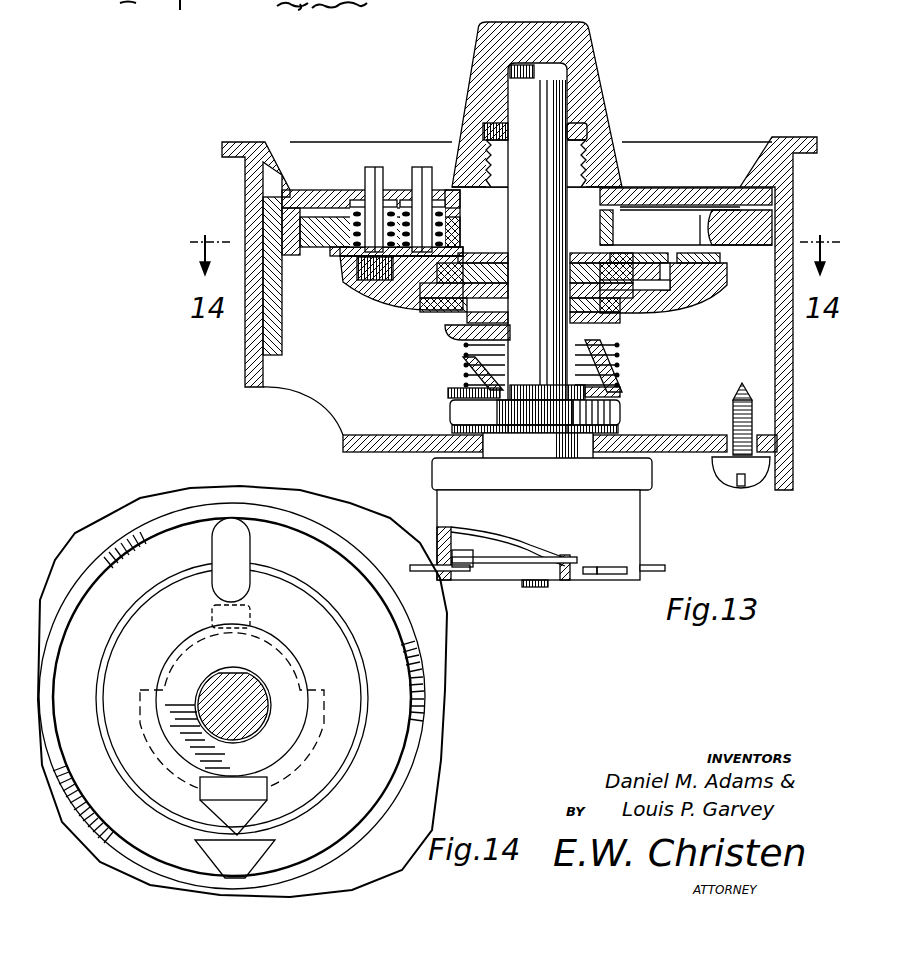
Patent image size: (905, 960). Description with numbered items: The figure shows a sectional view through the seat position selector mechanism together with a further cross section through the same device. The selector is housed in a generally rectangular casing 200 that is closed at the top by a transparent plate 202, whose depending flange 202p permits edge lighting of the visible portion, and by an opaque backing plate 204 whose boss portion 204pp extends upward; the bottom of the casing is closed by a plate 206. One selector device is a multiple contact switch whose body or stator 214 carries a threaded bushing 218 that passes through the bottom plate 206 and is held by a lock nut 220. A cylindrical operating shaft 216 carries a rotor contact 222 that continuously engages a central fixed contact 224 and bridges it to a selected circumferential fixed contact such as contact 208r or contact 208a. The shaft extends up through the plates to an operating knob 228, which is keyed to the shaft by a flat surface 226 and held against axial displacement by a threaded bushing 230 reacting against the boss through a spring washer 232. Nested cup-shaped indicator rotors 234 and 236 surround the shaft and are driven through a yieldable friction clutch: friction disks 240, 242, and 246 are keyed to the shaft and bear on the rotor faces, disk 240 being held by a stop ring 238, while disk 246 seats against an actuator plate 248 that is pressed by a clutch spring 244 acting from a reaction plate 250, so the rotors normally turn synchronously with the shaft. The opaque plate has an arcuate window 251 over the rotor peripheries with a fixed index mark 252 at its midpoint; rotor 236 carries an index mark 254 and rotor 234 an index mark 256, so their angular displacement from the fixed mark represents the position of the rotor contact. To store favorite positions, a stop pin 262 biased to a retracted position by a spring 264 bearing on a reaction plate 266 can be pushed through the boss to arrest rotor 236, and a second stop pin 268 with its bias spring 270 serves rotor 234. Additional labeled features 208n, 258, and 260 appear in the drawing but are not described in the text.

In FIG. 13, the casing 200 is at (245, 178).
In FIG. 13, the transparent plate 202 is at (300, 195).
In FIG. 13, the depending flange 202p is at (282, 300).
In FIG. 13, the backing plate 204 is at (300, 228).
In FIG. 13, the boss portion 204pp is at (448, 190).
In FIG. 13, the bottom plate 206 is at (393, 452).
In FIG. 13, the terminal n 208n is at (440, 545).
In FIG. 13, the fixed contact r 208r is at (660, 566).
In FIG. 13, the fixed contact a 208a is at (612, 575).
In FIG. 13, the switch body or stator 214 is at (644, 528).
In FIG. 13, the operating shaft 216 is at (510, 540).
In FIG. 13, the threaded bushing 218 is at (580, 400).
In FIG. 13, the lock nut 220 is at (612, 415).
In FIG. 13, the switch rotor contact 222 is at (487, 565).
In FIG. 13, the central fixed contact 224 is at (530, 588).
In FIG. 13, the flat surface 226 is at (500, 290).
In FIG. 14, the flat surface 226 is at (228, 674).
In FIG. 13, the operating knob 228 is at (588, 58).
In FIG. 13, the threaded bushing 230 is at (582, 153).
In FIG. 13, the spring washer 232 is at (602, 218).
In FIG. 13, the indicator rotor 234 is at (672, 280).
In FIG. 13, the indicator rotor 236 is at (705, 290).
In FIG. 13, the stop ring 238 is at (500, 228).
In FIG. 13, the friction disk 240 is at (500, 262).
In FIG. 13, the friction disk 242 is at (560, 290).
In FIG. 13, the clutch spring 244 is at (460, 358).
In FIG. 13, the friction disk 246 is at (500, 338).
In FIG. 13, the actuator plate 248 is at (445, 333).
In FIG. 13, the reaction plate 250 is at (448, 393).
In FIG. 13, the arcuate window 251 is at (712, 230).
In FIG. 13, the fixed reference index mark 252 is at (714, 188).
In FIG. 14, the index mark 254 is at (260, 858).
In FIG. 14, the index mark 256 is at (265, 800).
In FIG. 14, the slot 258 is at (250, 544).
In FIG. 14, the recess 260 is at (250, 588).
In FIG. 13, the stop pin 262 is at (370, 170).
In FIG. 13, the bias spring 264 is at (360, 262).
In FIG. 13, the reaction plate 266 is at (340, 252).
In FIG. 13, the stop pin 268 is at (425, 168).
In FIG. 13, the bias spring 270 is at (408, 222).